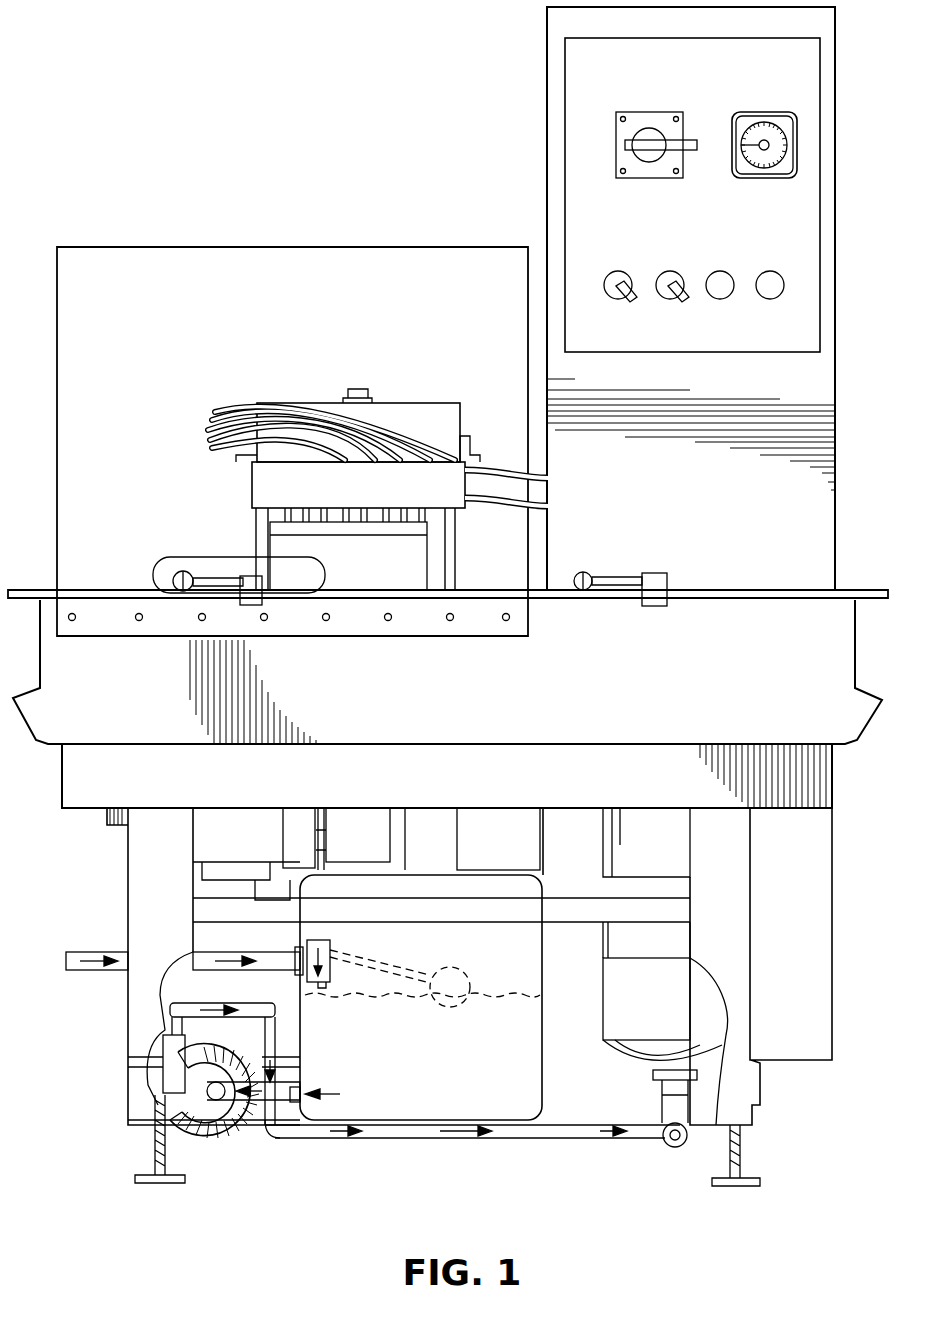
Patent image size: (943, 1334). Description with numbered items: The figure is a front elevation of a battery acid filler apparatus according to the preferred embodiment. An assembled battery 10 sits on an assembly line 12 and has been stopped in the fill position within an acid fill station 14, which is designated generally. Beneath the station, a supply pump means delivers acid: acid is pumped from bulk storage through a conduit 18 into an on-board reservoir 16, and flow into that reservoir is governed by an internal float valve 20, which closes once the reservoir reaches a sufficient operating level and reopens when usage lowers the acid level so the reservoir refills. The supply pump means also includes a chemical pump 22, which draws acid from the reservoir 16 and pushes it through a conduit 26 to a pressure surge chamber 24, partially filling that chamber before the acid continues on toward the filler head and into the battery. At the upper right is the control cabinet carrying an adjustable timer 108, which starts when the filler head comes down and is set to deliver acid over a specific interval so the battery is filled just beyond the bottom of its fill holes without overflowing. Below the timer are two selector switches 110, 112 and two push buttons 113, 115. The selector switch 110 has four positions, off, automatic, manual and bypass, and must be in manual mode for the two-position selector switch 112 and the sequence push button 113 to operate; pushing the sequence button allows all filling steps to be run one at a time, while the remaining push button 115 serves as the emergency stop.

The assembled battery 10 is at (358, 580).
The assembly line 12 is at (697, 592).
The acid fill station 14 is at (243, 495).
The on-board reservoir 16 is at (540, 1122).
The conduit 18 is at (66, 958).
The internal float valve 20 is at (332, 945).
The chemical pump 22 is at (192, 1098).
The pressure surge chamber 24 is at (708, 1025).
The conduit 26 is at (310, 1142).
The adjustable timer 108 is at (800, 149).
The selector switch 110 is at (609, 275).
The selector switch 112 is at (666, 272).
The sequence push button 113 is at (722, 271).
The push button 115 is at (782, 272).